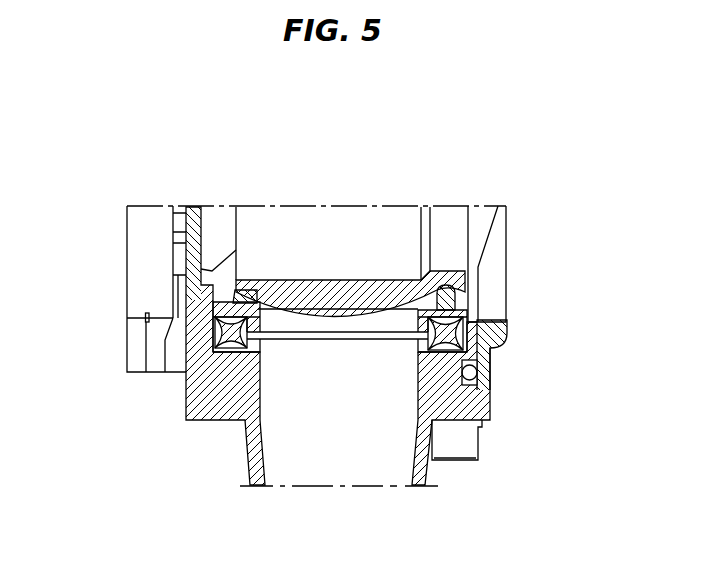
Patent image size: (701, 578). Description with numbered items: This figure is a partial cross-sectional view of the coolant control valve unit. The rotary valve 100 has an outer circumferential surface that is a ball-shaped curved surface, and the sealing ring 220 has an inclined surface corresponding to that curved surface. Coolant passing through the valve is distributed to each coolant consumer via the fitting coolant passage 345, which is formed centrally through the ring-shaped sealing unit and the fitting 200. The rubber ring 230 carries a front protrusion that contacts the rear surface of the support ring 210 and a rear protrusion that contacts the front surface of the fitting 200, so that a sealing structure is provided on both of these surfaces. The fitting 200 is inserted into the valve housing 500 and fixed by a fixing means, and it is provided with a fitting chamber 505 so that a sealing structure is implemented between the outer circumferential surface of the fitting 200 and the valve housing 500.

The rotary valve 100 is at (345, 290).
The fitting 200 is at (190, 402).
The support ring 210 is at (213, 302).
The sealing ring 220 is at (245, 290).
The rubber ring 230 is at (235, 352).
The fitting coolant passage 345 is at (343, 422).
The valve housing 500 is at (483, 354).
The fitting chamber 505 is at (470, 373).